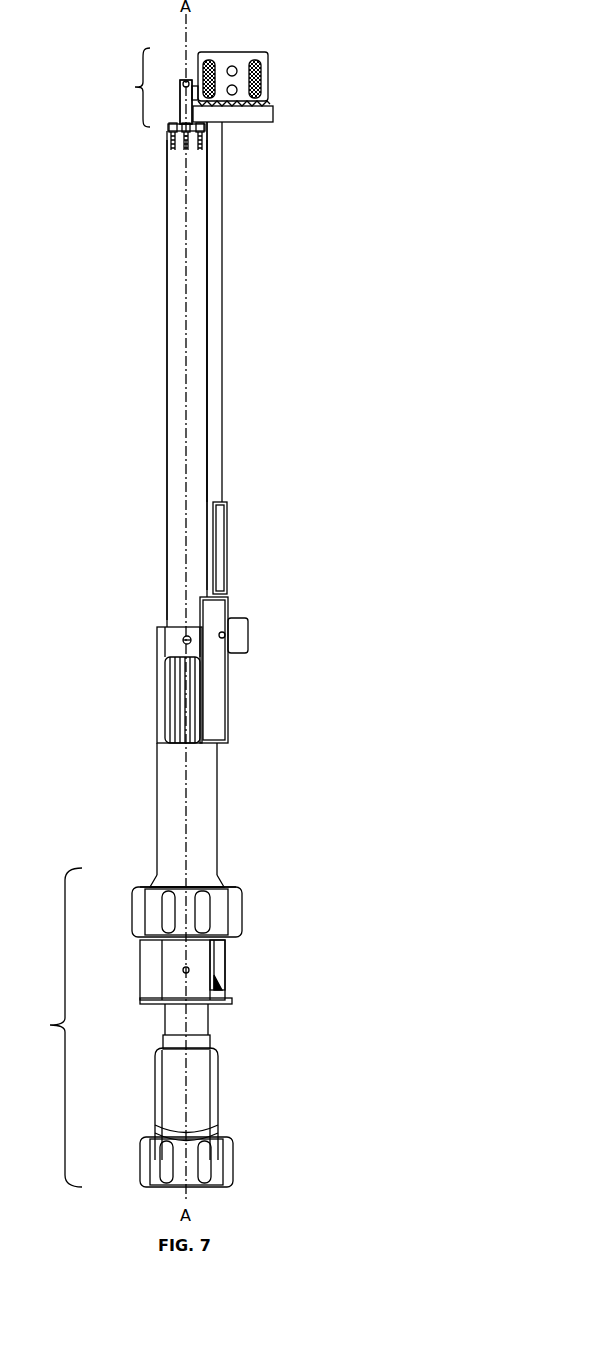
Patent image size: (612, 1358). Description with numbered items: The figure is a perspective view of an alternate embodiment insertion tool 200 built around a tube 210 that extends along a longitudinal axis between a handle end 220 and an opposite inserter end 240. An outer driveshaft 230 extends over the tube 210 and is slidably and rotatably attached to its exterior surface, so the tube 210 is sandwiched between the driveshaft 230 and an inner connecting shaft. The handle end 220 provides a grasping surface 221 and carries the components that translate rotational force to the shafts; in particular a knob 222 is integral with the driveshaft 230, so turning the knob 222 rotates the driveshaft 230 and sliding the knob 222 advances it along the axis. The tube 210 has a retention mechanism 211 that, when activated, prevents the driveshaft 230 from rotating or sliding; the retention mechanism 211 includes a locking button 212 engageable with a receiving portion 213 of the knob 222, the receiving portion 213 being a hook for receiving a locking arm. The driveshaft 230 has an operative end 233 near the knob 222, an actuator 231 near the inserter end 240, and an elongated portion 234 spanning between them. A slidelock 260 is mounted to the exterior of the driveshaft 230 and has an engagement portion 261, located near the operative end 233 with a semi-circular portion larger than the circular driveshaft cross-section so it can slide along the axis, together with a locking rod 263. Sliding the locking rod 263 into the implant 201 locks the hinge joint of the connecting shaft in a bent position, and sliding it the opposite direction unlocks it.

The insertion tool 200 is at (409, 110).
The implant 201 is at (268, 73).
The inserter end 240 is at (146, 87).
The actuator 231 is at (165, 130).
The outer driveshaft 230 is at (176, 498).
The elongated portion 234 is at (181, 319).
The locking rod 263 is at (222, 265).
The slidelock 260 is at (232, 658).
The engagement portion 261 is at (222, 700).
The operative end 233 is at (226, 888).
The knob 222 is at (232, 911).
The retention mechanism 211 is at (145, 972).
The receiving portion 213 is at (233, 942).
The locking button 212 is at (228, 985).
The tube 210 is at (163, 1025).
The grasping surface 221 is at (203, 1090).
The handle end 220 is at (49, 1027).